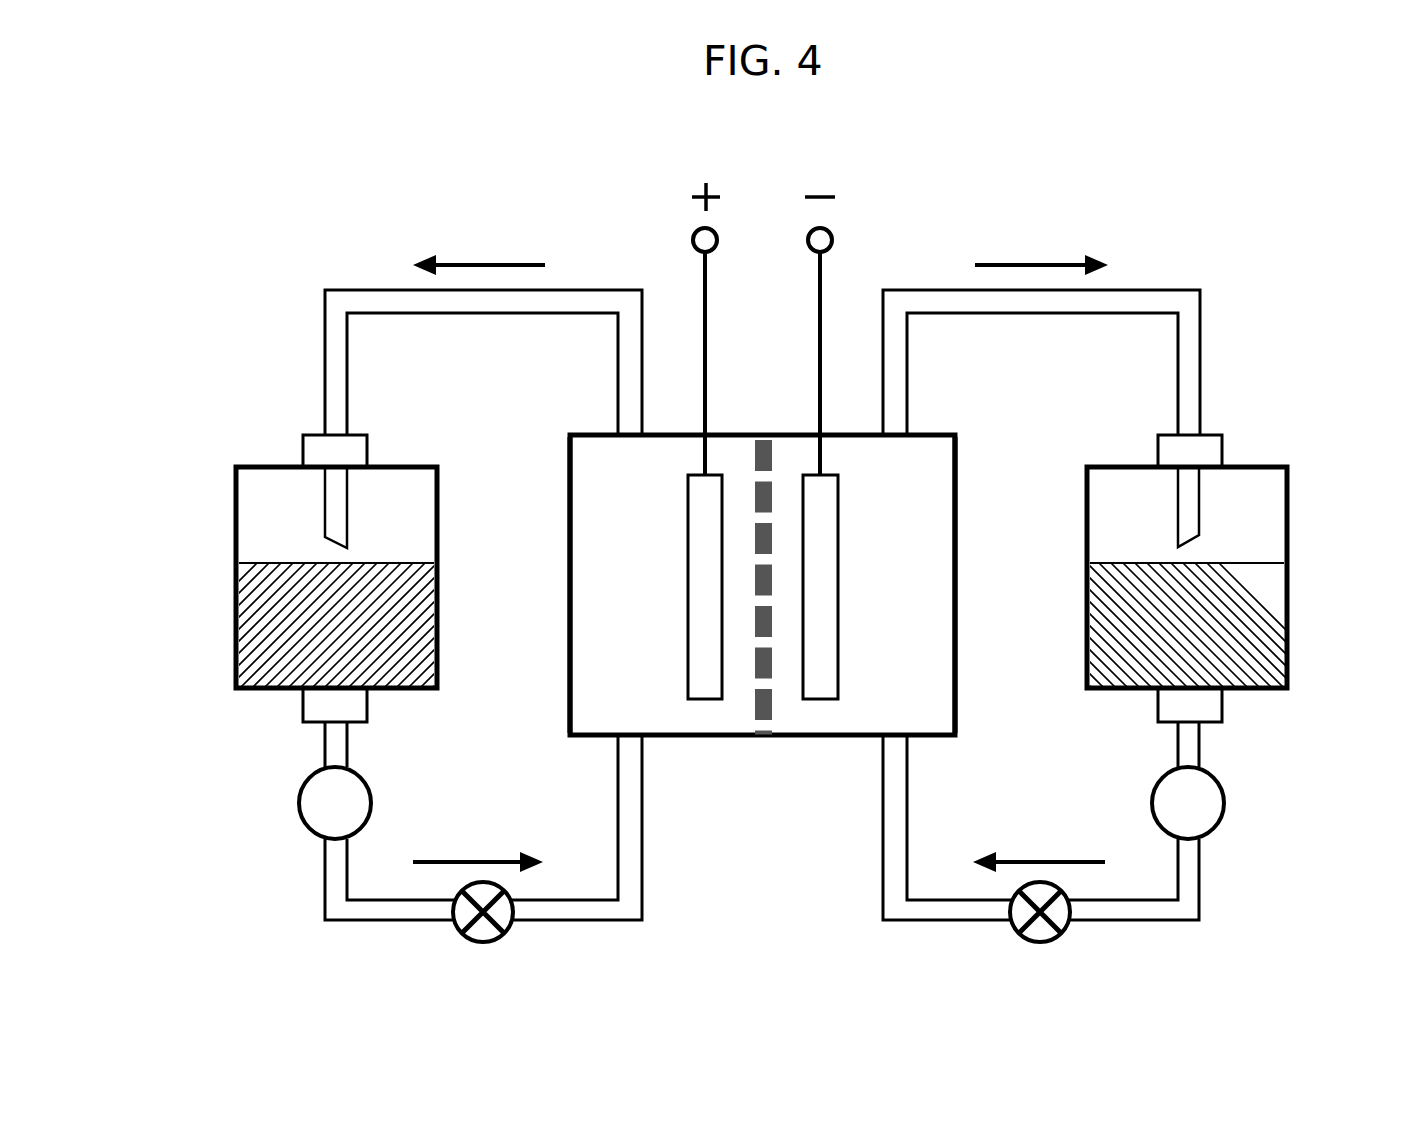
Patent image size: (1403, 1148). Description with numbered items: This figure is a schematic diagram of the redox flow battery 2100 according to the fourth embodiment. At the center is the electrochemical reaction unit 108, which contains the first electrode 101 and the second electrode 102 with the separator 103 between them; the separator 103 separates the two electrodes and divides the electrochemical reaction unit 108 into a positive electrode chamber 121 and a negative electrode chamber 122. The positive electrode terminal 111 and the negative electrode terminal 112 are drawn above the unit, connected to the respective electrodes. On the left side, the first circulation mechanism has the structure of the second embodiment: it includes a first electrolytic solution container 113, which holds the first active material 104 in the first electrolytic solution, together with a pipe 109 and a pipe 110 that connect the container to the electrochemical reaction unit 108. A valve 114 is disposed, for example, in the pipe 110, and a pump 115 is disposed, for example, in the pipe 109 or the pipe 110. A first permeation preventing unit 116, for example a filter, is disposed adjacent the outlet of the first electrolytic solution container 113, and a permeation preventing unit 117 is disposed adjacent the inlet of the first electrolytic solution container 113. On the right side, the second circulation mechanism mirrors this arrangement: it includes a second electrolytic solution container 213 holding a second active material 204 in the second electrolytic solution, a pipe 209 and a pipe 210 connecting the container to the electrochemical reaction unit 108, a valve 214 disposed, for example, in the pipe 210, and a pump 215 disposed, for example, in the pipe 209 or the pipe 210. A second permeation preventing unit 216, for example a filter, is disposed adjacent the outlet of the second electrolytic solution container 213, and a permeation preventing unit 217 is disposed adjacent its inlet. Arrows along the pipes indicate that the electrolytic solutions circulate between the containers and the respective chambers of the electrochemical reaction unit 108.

The redox flow battery 2100 is at (790, 149).
The first electrode 101 is at (705, 675).
The second electrode 102 is at (823, 677).
The separator 103 is at (765, 432).
The electrochemical reaction unit 108 is at (925, 738).
The pipe 109 is at (335, 312).
The pipe 110 is at (335, 908).
The positive electrode terminal 111 is at (695, 234).
The negative electrode terminal 112 is at (830, 233).
The first electrolytic solution container 113 is at (253, 510).
The first active material 104 is at (265, 640).
The valve 114 is at (322, 805).
The pump 115 is at (457, 928).
The first permeation preventing unit 116 is at (352, 695).
The permeation preventing unit 117 is at (323, 452).
The positive electrode chamber 121 is at (593, 468).
The negative electrode chamber 122 is at (940, 463).
The pipe 209 is at (1190, 302).
The pipe 210 is at (1190, 908).
The second electrolytic solution container 213 is at (1267, 510).
The negative electrolyte 204 is at (1253, 630).
The valve 214 is at (1208, 803).
The pump 215 is at (1065, 925).
The second permeation preventing unit 216 is at (1172, 705).
The permeation preventing unit 217 is at (1207, 452).